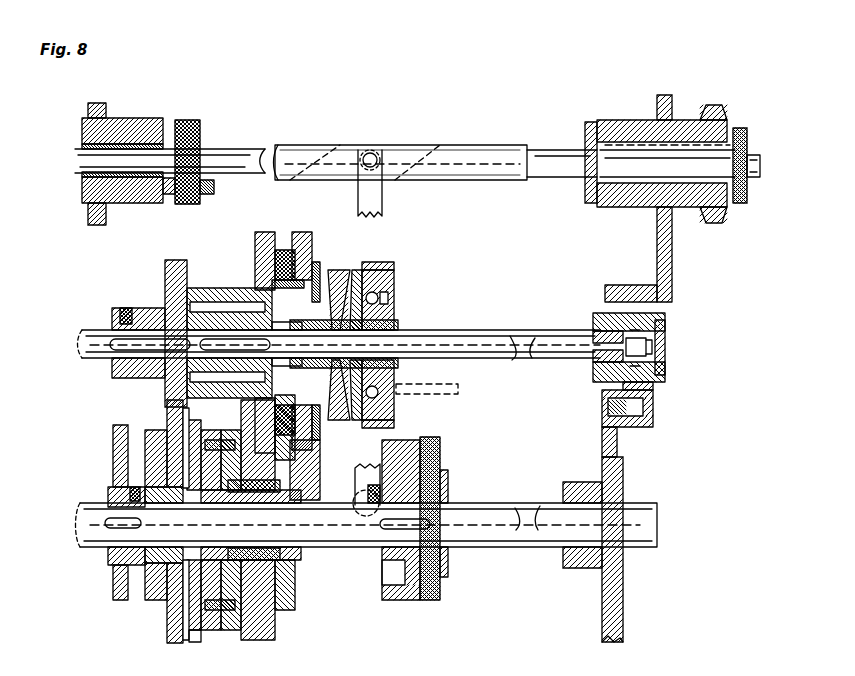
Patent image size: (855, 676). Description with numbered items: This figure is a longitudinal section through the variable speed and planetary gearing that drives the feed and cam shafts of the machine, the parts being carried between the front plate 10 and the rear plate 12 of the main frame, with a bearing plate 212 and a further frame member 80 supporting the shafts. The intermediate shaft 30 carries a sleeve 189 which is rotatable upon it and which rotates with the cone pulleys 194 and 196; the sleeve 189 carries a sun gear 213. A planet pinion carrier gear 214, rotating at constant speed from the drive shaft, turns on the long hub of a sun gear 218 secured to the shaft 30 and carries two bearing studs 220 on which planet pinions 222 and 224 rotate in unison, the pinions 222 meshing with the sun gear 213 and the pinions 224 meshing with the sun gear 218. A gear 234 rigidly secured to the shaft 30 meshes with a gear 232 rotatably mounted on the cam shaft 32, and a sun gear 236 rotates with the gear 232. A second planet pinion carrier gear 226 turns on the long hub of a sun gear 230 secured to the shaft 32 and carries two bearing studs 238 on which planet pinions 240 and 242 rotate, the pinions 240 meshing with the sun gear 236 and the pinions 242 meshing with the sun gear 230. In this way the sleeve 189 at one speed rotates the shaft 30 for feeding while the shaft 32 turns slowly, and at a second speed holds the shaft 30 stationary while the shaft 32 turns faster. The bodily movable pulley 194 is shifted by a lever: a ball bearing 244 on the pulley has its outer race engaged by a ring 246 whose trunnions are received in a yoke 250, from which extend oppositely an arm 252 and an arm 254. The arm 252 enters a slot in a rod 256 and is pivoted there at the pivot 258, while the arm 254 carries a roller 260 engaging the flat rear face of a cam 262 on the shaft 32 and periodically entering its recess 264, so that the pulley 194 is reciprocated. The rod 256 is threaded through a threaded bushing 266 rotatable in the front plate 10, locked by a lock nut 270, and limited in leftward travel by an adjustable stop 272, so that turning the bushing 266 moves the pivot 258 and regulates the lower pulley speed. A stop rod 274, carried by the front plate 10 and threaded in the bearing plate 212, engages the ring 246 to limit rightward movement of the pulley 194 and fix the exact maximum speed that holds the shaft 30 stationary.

The front plate 10 is at (623, 463).
The rear plate 12 is at (86, 190).
The intermediate shaft 30 is at (478, 336).
The cam shaft 32 is at (486, 540).
The housing wall 80 is at (112, 580).
The sleeve 189 is at (396, 328).
The cone pulley 194 is at (356, 272).
The cone pulley 196 is at (330, 274).
The bearing plate 212 is at (652, 386).
The sun gear 213 is at (298, 338).
The planet pinion carrier gear 214 is at (260, 240).
The sun gear 218 is at (272, 335).
The bearing studs 220 is at (316, 270).
The planet pinions 222 is at (306, 234).
The planet pinions 224 is at (278, 248).
The planet pinion carrier gear 226 is at (243, 640).
The sun gear 230 is at (225, 495).
The gear 232 is at (180, 622).
The gear 234 is at (186, 264).
The sun gear 236 is at (170, 552).
The bearing studs 238 is at (187, 458).
The planet pinions 240 is at (183, 416).
The planet pinions 242 is at (212, 432).
The ball bearing 244 is at (380, 298).
The ring 246 is at (392, 284).
The yoke 250 is at (382, 264).
The arm 252 is at (372, 198).
The arm 254 is at (356, 478).
The rod 256 is at (372, 152).
The pivot 258 is at (370, 160).
The roller 260 is at (356, 512).
The cam 262 is at (406, 600).
The recess 264 is at (372, 486).
The threaded bushing 266 is at (626, 150).
The lock nut 270 is at (748, 188).
The adjustable stop 272 is at (185, 204).
The stop rod 274 is at (458, 392).